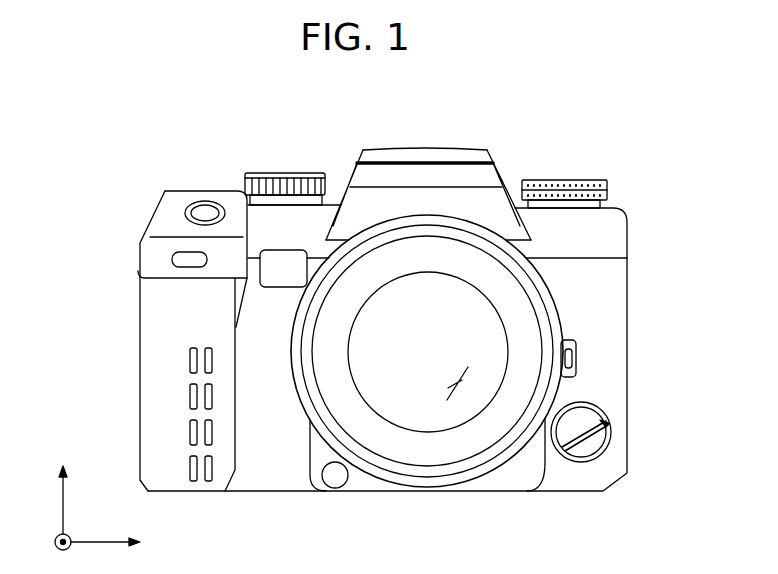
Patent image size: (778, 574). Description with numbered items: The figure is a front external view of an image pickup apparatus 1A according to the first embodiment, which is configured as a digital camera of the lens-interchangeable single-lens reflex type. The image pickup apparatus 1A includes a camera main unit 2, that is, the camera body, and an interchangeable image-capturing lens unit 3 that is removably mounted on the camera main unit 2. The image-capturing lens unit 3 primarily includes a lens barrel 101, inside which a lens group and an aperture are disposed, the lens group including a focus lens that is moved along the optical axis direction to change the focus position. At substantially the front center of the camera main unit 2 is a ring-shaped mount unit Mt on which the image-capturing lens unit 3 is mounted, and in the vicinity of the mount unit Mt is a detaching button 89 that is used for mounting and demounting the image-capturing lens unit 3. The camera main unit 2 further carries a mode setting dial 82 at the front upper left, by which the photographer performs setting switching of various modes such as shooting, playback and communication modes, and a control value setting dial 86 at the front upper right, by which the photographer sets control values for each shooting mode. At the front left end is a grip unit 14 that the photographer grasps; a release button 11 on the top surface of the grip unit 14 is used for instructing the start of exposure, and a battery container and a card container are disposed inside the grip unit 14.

The image pickup apparatus 1A is at (647, 96).
The camera main unit 2 is at (627, 312).
The image-capturing lens unit 3 is at (478, 445).
The release button 11 is at (205, 205).
The grip unit 14 is at (146, 372).
The mode setting dial 82 is at (286, 173).
The control value setting dial 86 is at (563, 180).
The detaching button 89 is at (577, 360).
The lens barrel 101 is at (552, 293).
The mount unit Mt is at (301, 406).